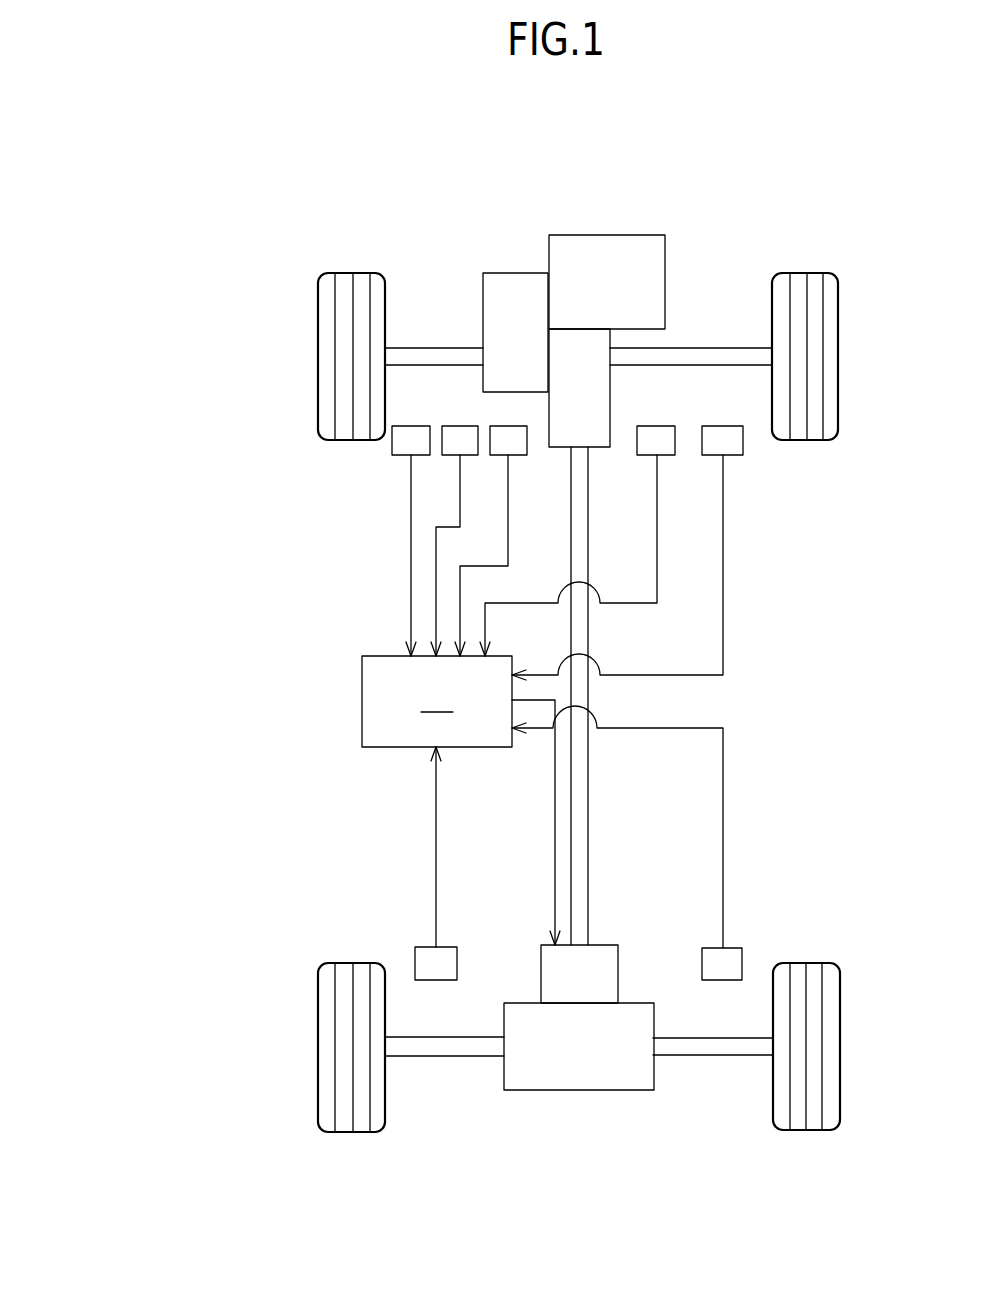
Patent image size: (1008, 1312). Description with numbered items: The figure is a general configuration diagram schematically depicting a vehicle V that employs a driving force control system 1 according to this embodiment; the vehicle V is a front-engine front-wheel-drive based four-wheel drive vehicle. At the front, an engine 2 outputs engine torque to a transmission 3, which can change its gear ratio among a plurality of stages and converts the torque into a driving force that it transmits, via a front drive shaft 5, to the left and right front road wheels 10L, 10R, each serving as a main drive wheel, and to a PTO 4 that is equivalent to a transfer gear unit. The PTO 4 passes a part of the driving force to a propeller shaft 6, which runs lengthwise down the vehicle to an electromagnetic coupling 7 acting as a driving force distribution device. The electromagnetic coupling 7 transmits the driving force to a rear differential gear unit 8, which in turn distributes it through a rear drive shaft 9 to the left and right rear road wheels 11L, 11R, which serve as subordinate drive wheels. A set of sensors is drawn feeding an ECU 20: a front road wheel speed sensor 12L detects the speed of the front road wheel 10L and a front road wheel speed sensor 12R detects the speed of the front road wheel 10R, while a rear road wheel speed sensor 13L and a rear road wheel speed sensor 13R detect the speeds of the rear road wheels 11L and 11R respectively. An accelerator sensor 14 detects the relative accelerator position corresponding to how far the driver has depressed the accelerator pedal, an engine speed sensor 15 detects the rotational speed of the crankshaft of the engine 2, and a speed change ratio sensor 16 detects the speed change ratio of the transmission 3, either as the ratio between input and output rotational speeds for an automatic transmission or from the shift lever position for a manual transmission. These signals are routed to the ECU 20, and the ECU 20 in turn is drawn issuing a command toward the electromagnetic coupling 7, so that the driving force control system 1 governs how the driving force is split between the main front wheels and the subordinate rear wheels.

The vehicle V is at (667, 170).
The driving force control system 1 is at (347, 617).
The engine 2 is at (608, 235).
The transmission 3 is at (510, 273).
The PTO (Power Take-Off) 4 is at (610, 400).
The front drive shaft 5 is at (720, 348).
The propeller shaft 6 is at (588, 780).
The electromagnetic coupling (driving force distribution device) 7 is at (602, 945).
The rear differential gear unit 8 is at (578, 1090).
The rear drive shaft 9 is at (719, 1055).
The left front road wheel 10L is at (345, 273).
The right front road wheel 10R is at (800, 273).
The left rear road wheel 11L is at (345, 1132).
The right rear road wheel 11R is at (800, 1130).
The front road wheel speed sensor 12L is at (402, 456).
The front road wheel speed sensor 12R is at (732, 456).
The rear road wheel speed sensor 13L is at (415, 948).
The rear road wheel speed sensor 13R is at (742, 948).
The accelerator sensor 14 is at (633, 453).
The engine speed sensor 15 is at (517, 456).
The speed change ratio sensor 16 is at (463, 427).
The ECU (Electronic Control Unit) 20 is at (437, 701).